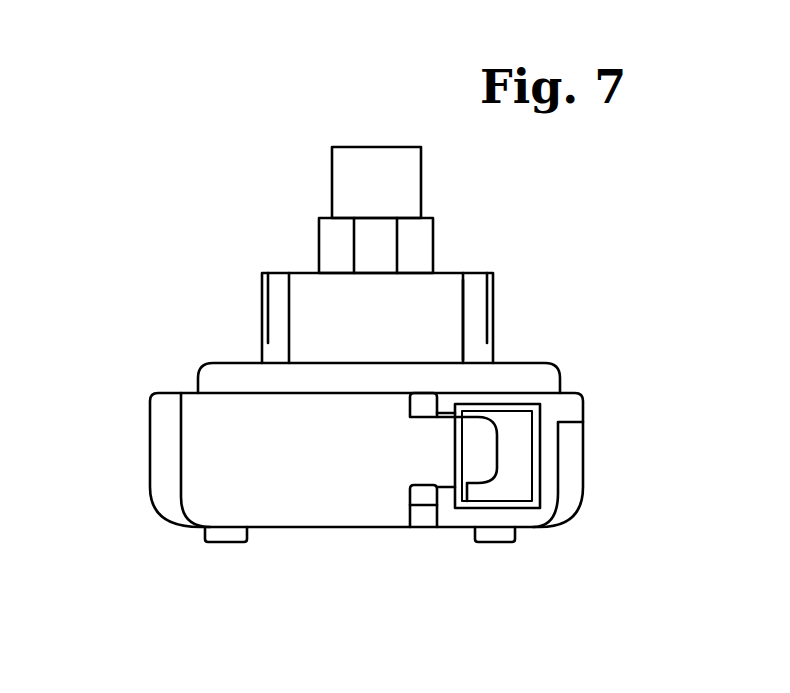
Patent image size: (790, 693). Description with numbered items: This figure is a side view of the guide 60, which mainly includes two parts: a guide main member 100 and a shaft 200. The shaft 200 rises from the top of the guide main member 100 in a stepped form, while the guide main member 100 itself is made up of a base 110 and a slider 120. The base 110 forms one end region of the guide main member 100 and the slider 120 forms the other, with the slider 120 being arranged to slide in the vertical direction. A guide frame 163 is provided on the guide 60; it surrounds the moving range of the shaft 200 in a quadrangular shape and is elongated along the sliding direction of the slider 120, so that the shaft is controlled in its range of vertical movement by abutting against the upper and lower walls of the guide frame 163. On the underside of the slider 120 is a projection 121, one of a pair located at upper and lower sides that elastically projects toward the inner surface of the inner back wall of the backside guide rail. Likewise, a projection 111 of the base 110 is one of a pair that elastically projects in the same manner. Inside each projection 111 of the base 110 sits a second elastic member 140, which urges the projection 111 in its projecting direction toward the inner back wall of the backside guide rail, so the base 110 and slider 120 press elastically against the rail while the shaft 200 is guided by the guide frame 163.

The guide 60 is at (206, 110).
The shaft 200 is at (343, 175).
The guide main member 100 is at (204, 347).
The guide frame 163 is at (432, 320).
The slider 120 is at (197, 453).
The base 110 is at (570, 482).
The projections 121 is at (224, 544).
The projections 111 is at (490, 547).
The second elastic member 140 is at (505, 480).